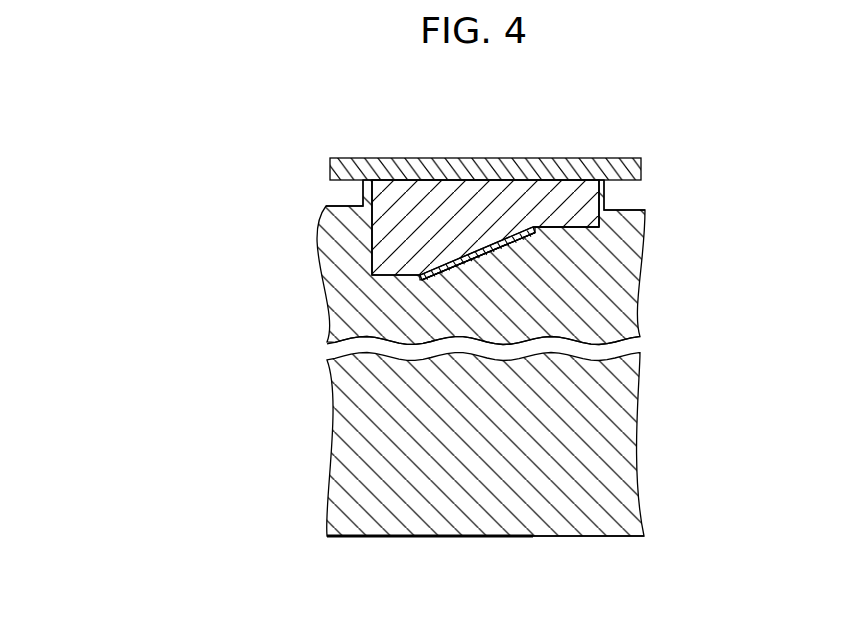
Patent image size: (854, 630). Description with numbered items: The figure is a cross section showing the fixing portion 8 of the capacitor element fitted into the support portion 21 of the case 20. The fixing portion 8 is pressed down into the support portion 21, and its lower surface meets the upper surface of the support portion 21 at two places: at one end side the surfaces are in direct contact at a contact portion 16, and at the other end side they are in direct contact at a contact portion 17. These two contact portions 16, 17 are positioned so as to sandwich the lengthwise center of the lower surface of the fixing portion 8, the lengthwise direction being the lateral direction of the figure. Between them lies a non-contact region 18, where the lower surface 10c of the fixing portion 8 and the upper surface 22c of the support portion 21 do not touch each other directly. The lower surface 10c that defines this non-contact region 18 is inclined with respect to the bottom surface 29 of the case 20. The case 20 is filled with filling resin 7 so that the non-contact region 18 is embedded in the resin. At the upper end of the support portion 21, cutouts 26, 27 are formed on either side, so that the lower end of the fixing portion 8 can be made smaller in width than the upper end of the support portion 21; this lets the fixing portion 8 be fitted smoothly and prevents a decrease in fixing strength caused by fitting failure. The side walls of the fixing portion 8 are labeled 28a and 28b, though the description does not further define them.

The filling resin 7 is at (566, 165).
The fixing portion 8 is at (427, 205).
The lower surface 10c is at (482, 248).
The contact portion 16 is at (578, 229).
The contact portion 17 is at (480, 252).
The non-contact region 18 is at (458, 280).
The case 20 is at (597, 297).
The support portion 21 is at (503, 246).
The upper surface 22c is at (478, 254).
The cutout 26 is at (607, 210).
The cutout 27 is at (355, 207).
The right side wall 28a is at (605, 183).
The left side wall 28b is at (363, 193).
The bottom surface 29 is at (570, 537).